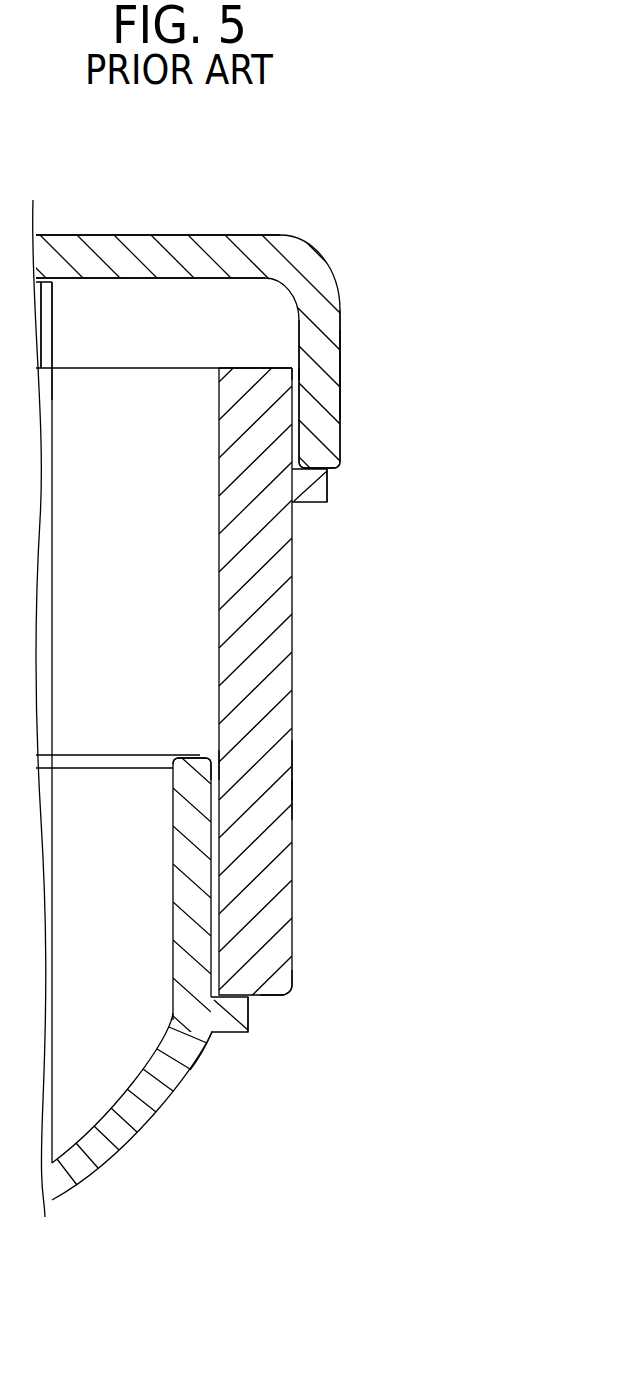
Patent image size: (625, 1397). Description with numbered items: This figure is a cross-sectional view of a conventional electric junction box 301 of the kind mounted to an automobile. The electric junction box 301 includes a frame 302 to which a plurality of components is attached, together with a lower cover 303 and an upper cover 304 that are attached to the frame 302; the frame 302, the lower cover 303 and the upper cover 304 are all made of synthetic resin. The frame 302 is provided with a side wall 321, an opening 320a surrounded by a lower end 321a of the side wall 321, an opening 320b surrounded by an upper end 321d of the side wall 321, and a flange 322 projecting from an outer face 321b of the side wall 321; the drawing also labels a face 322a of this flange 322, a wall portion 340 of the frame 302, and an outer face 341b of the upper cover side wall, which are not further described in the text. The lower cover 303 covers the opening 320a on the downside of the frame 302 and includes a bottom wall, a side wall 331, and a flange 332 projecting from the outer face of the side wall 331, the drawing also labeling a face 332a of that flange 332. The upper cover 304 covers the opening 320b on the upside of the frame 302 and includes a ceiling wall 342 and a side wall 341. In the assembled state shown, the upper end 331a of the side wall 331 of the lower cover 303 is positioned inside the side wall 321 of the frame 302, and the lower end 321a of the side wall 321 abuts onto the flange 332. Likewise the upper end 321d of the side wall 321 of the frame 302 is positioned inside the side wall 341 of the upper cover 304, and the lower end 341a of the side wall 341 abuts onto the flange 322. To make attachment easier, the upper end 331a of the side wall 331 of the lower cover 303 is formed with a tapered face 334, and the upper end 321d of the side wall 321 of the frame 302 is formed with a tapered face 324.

The electric junction box 301 is at (515, 181).
The frame 302 is at (295, 714).
The lower cover 303 is at (172, 1110).
The upper cover 304 is at (343, 328).
The opening 320a is at (213, 1033).
The opening 320b is at (73, 380).
The side wall 321 is at (293, 770).
The lower end 321a is at (283, 1003).
The outer face 321b is at (293, 795).
The upper end 321d is at (238, 368).
The flange 322 is at (328, 503).
The engaging surface of projection 322a is at (328, 490).
The tapered face 324 is at (275, 373).
The side wall 331 is at (190, 887).
The upper end 331a is at (195, 758).
The flange 332 is at (243, 1032).
The surface of lower projection 332a is at (250, 1010).
The tapered face 334 is at (207, 758).
The peripheral wall 340 is at (297, 501).
The side wall 341 is at (330, 354).
The lower end 341a is at (330, 476).
The outer surface of cover side wall 341b is at (340, 376).
The ceiling wall 342 is at (142, 243).